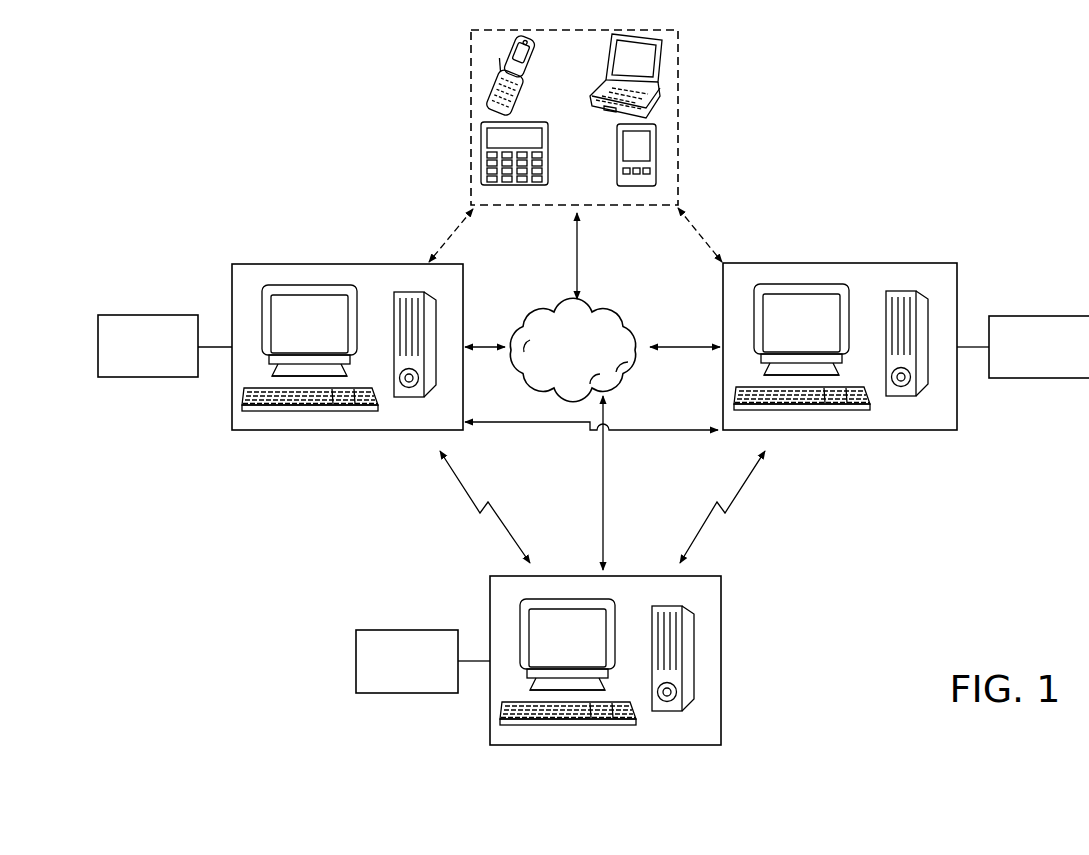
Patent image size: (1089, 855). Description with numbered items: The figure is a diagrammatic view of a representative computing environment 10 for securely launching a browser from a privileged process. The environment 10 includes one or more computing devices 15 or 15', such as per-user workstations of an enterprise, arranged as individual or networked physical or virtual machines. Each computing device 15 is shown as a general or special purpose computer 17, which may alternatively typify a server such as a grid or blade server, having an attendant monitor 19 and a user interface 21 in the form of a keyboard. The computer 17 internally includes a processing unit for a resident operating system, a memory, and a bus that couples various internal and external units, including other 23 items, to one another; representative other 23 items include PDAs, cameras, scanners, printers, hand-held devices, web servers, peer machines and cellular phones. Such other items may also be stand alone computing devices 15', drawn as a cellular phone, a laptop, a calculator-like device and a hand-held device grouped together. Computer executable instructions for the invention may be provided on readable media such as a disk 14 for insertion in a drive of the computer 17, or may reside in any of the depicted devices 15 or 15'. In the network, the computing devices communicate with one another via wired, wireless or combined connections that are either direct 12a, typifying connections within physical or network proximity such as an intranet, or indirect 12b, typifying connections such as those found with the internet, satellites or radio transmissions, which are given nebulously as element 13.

The computing environment 10 is at (216, 170).
The direct connection 12a is at (452, 242).
The indirect connection 12b is at (577, 258).
The nebulous network element 13 is at (612, 312).
The disk 14 is at (403, 375).
The computing device 15 is at (594, 463).
The stand alone computing device 15' is at (617, 117).
The computer 17 is at (413, 400).
The monitor 19 is at (268, 288).
The user interface 21 is at (292, 411).
The other 23 is at (150, 315).